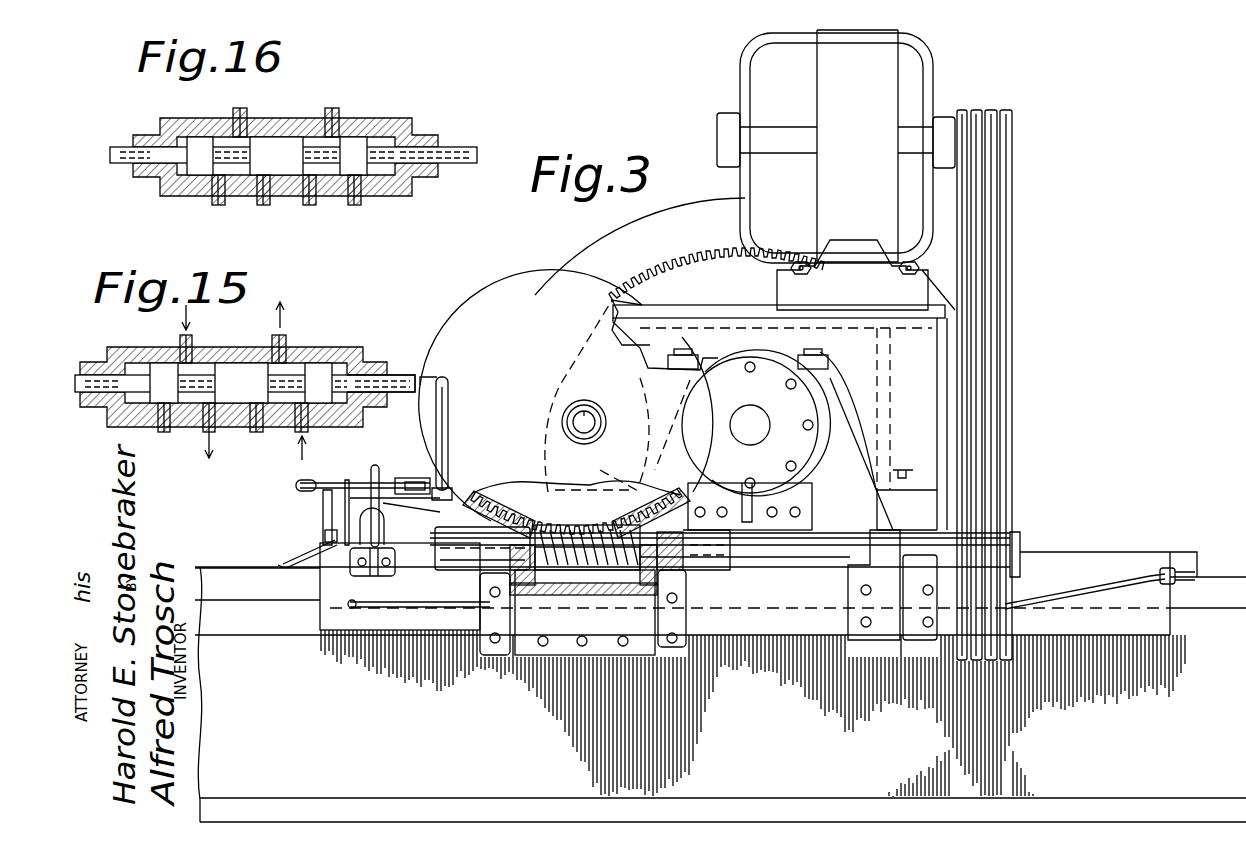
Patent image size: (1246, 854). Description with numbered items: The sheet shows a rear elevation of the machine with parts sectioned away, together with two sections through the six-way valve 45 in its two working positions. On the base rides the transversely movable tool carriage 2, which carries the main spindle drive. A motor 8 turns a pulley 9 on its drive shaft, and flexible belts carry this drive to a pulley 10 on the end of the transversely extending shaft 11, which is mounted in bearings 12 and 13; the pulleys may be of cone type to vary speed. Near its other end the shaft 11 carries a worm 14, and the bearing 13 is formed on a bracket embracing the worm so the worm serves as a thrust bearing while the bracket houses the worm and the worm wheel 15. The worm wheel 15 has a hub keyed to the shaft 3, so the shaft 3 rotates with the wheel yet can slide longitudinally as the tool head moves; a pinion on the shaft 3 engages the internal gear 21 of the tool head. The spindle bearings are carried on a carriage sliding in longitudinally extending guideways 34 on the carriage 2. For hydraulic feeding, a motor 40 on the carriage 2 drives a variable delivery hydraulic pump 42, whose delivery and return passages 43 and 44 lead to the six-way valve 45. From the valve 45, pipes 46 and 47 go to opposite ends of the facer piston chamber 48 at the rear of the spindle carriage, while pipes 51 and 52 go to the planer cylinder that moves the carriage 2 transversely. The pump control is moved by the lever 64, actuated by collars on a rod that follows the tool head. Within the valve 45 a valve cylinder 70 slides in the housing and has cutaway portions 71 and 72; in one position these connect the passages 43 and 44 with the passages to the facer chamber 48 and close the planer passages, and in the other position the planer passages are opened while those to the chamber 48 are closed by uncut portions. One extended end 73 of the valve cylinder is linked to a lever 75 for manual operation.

In FIG. 3, the tool carriage 2 is at (1126, 570).
In FIG. 3, the shaft 3 is at (576, 422).
In FIG. 3, the motor 8 is at (836, 170).
In FIG. 3, the pulley 9 is at (1012, 138).
In FIG. 3, the pulley 10 is at (1012, 480).
In FIG. 3, the transversely extending shaft 11 is at (782, 555).
In FIG. 3, the bearing 12 is at (868, 560).
In FIG. 3, the bearing 13 is at (400, 586).
In FIG. 3, the worm 14 is at (582, 574).
In FIG. 3, the worm wheel 15 is at (514, 492).
In FIG. 3, the internal gear 21 is at (707, 253).
In FIG. 3, the guideways 34 is at (872, 512).
In FIG. 3, the motor 40 is at (482, 535).
In FIG. 3, the variable delivery hydraulic pump 42 is at (446, 386).
In FIG. 16, the delivery pipe 43 is at (238, 72).
In FIG. 16, the return pipe 44 is at (338, 112).
In FIG. 3, the six-way valve 45 is at (384, 522).
In FIG. 16, the pipe 46 is at (305, 206).
In FIG. 16, the pipe 47 is at (218, 208).
In FIG. 3, the piston chamber 48 is at (756, 440).
In FIG. 16, the pipe 51 is at (259, 203).
In FIG. 3, the pipe 51 is at (296, 560).
In FIG. 16, the pipe 52 is at (353, 204).
In FIG. 3, the pipe 52 is at (462, 612).
In FIG. 3, the lever 64 is at (300, 486).
In FIG. 15, the valve cylinder 70 is at (318, 372).
In FIG. 15, the cutaway portion 71 is at (200, 372).
In FIG. 15, the cutaway portion 72 is at (270, 373).
In FIG. 15, the extended end of valve cylinder 73 is at (398, 376).
In FIG. 3, the lever 75 is at (372, 503).